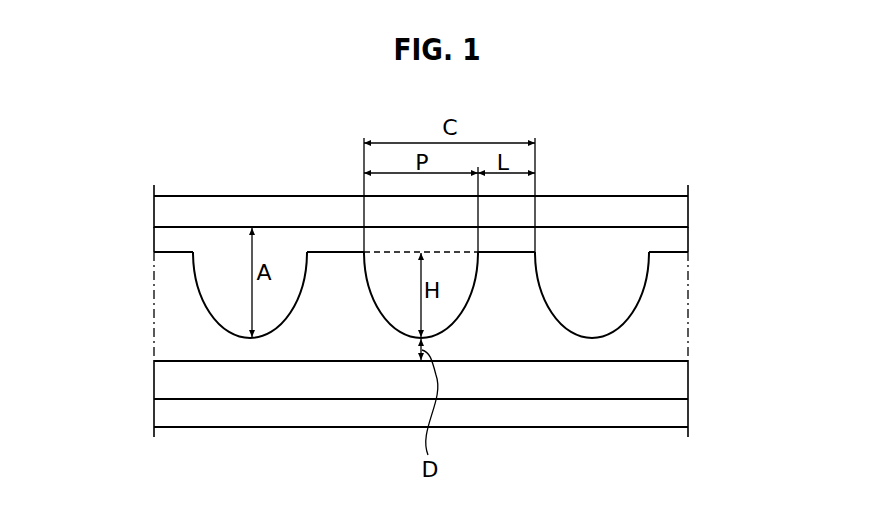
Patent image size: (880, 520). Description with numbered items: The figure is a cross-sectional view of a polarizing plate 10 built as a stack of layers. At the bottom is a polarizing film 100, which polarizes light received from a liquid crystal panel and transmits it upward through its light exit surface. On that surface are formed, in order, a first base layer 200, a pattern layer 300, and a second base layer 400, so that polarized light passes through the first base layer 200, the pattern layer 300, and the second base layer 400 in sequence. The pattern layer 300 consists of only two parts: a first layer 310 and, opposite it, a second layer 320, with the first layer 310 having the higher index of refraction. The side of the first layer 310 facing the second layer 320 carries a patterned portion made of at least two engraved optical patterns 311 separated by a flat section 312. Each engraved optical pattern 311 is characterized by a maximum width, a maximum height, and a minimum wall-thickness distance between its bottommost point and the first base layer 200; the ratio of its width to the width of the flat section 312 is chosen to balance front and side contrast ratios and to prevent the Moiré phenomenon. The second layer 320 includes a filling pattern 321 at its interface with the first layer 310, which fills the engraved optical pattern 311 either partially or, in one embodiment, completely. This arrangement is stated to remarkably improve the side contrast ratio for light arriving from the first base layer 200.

The polarizing plate 10 is at (668, 142).
The polarizing film 100 is at (680, 410).
The first base layer 200 is at (680, 377).
The pattern layer 300 is at (700, 228).
The first layer 310 is at (162, 310).
The engraved optical pattern 311 is at (395, 330).
The flat section 312 is at (504, 255).
The second layer 320 is at (162, 242).
The filling pattern 321 is at (596, 272).
The second base layer 400 is at (680, 212).